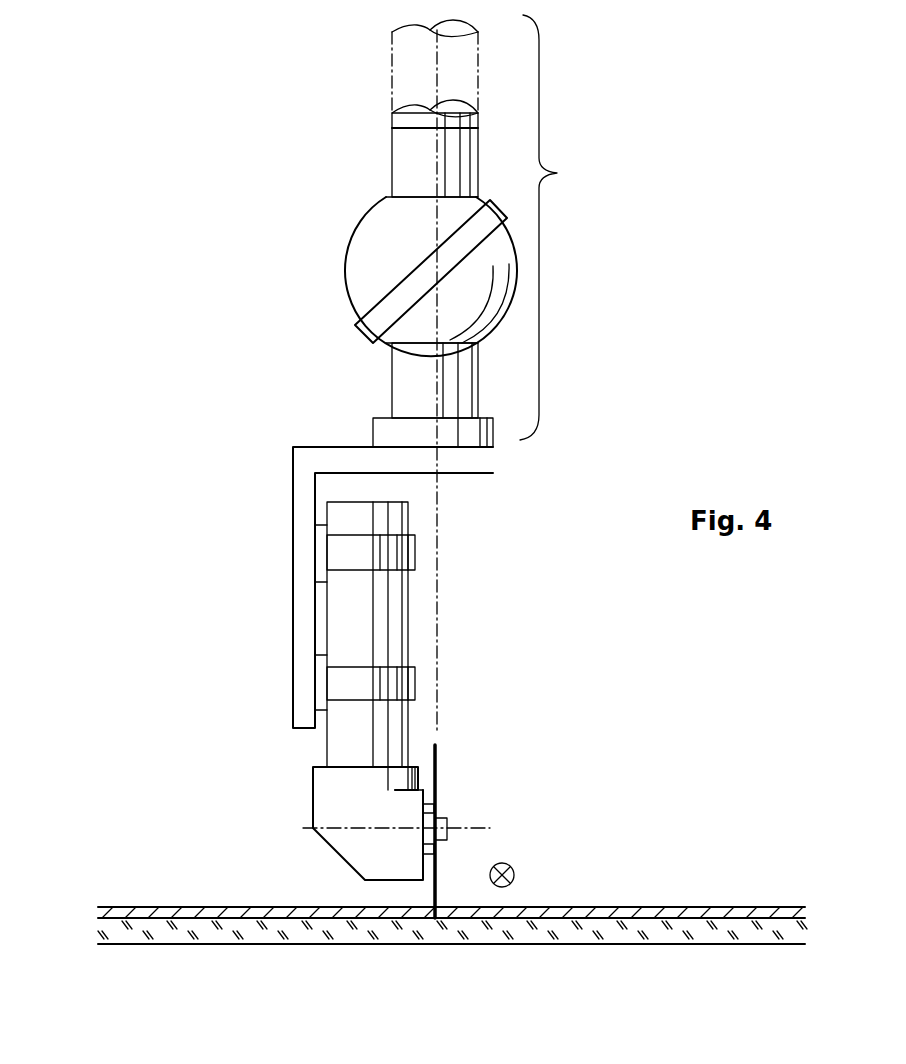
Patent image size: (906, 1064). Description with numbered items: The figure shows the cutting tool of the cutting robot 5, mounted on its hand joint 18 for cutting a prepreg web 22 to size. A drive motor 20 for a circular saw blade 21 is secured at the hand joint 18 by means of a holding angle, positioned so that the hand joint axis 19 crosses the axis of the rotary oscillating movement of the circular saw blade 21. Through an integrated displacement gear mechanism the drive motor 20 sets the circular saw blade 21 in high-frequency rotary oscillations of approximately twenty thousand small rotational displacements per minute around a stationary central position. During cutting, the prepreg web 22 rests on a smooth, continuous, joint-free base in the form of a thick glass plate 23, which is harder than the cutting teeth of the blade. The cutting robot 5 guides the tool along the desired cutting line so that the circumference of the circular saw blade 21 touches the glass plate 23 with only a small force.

The cutting robot 5 is at (415, 231).
The hand joint 18 is at (397, 265).
The hand joint axis 19 is at (437, 487).
The drive motor 20 is at (383, 654).
The circular saw blade 21 is at (439, 875).
The prepreg web 22 is at (155, 913).
The glass plate 23 is at (610, 928).